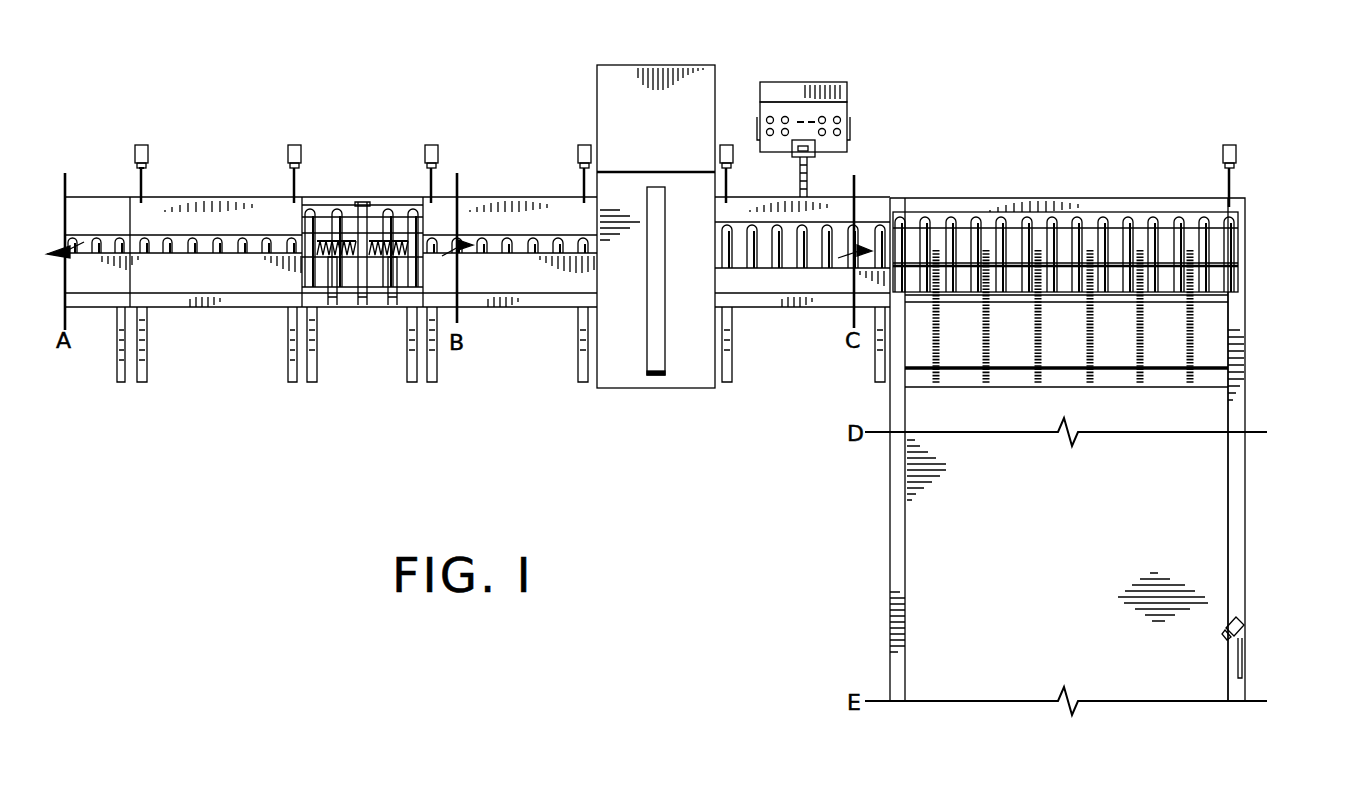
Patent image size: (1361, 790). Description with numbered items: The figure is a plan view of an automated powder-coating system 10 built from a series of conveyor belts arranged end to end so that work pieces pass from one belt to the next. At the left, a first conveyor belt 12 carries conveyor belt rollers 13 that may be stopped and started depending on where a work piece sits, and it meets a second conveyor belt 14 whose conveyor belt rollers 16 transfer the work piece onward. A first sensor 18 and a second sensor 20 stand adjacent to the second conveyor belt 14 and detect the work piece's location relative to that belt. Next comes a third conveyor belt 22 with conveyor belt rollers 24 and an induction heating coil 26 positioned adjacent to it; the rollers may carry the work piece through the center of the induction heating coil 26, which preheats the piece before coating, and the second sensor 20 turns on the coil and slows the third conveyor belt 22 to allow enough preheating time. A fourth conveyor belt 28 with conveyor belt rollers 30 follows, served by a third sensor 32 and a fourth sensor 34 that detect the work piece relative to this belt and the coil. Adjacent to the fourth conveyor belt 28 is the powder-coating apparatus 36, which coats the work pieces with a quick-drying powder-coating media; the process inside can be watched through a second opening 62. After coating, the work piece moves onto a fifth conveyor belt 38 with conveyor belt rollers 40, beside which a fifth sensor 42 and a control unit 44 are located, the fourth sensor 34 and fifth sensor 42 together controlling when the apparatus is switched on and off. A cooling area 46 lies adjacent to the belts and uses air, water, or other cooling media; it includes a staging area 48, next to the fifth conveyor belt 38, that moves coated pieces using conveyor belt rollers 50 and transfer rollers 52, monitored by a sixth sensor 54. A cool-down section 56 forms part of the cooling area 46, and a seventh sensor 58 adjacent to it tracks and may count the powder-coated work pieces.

The powder-coating system 10 is at (138, 74).
The first conveyor belt 12 is at (108, 206).
The conveyor belt rollers 13 is at (120, 244).
The second conveyor belt 14 is at (248, 203).
The conveyor belt rollers 16 is at (185, 253).
The first sensor 18 is at (143, 146).
The second sensor 20 is at (289, 146).
The third conveyor belt 22 is at (373, 200).
The conveyor belt rollers 24 is at (310, 212).
The induction heating coil 26 is at (402, 247).
The fourth conveyor belt 28 is at (537, 203).
The conveyor belt rollers 30 is at (505, 254).
The third sensor 32 is at (428, 146).
The fourth sensor 34 is at (583, 146).
The powder-coating apparatus 36 is at (625, 65).
The fifth conveyor belt 38 is at (865, 205).
The conveyor belt rollers 40 is at (798, 260).
The fifth sensor 42 is at (727, 146).
The control unit 44 is at (800, 84).
The cooling area 46 is at (1287, 189).
The staging area 48 is at (930, 205).
The conveyor belt rollers 50 is at (1083, 237).
The transfer rollers 52 is at (1186, 320).
The sixth sensor 54 is at (1228, 146).
The cool-down section 56 is at (1216, 506).
The seventh sensor 58 is at (1243, 622).
The second opening 62 is at (668, 282).